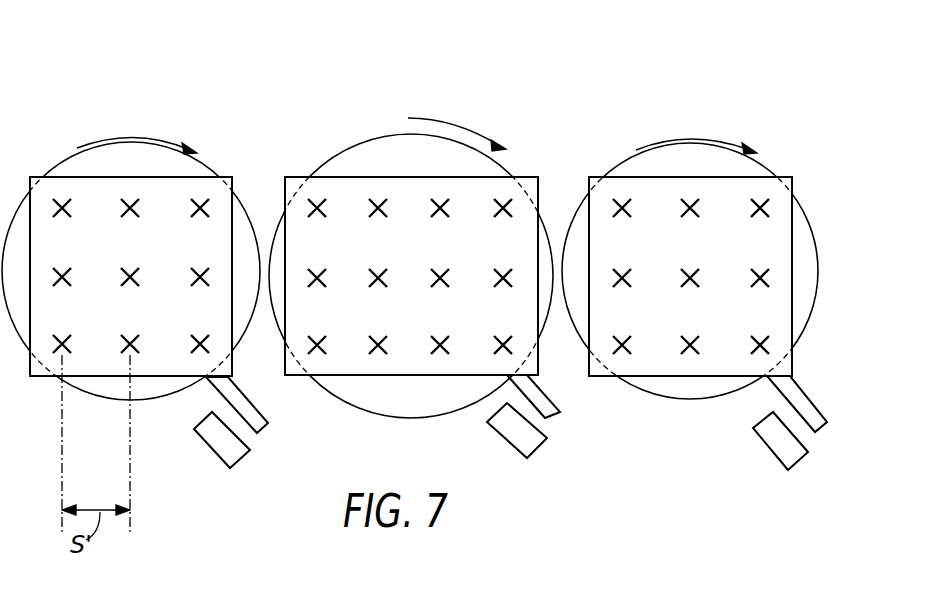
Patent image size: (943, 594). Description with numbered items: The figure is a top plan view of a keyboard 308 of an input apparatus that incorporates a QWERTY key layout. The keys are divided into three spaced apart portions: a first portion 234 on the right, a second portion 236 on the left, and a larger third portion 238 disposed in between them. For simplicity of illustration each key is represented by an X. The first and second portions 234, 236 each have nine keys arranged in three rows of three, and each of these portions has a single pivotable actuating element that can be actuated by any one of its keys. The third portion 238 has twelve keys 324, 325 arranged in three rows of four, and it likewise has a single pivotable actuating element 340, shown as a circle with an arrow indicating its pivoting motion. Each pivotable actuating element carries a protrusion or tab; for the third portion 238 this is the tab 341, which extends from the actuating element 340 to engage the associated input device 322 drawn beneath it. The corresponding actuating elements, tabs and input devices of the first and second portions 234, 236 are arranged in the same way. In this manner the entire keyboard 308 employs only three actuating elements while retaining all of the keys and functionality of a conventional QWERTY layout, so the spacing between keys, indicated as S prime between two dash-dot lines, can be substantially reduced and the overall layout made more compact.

The second portion 236 is at (156, 261).
The third portion 238 is at (432, 267).
The first portion 234 is at (712, 269).
The pivotable actuating element 340 is at (400, 148).
The tab 341 is at (545, 392).
The input device 322 is at (515, 415).
The keys 324 is at (443, 338).
The keys 325 is at (374, 338).
The keyboard 308 is at (193, 530).